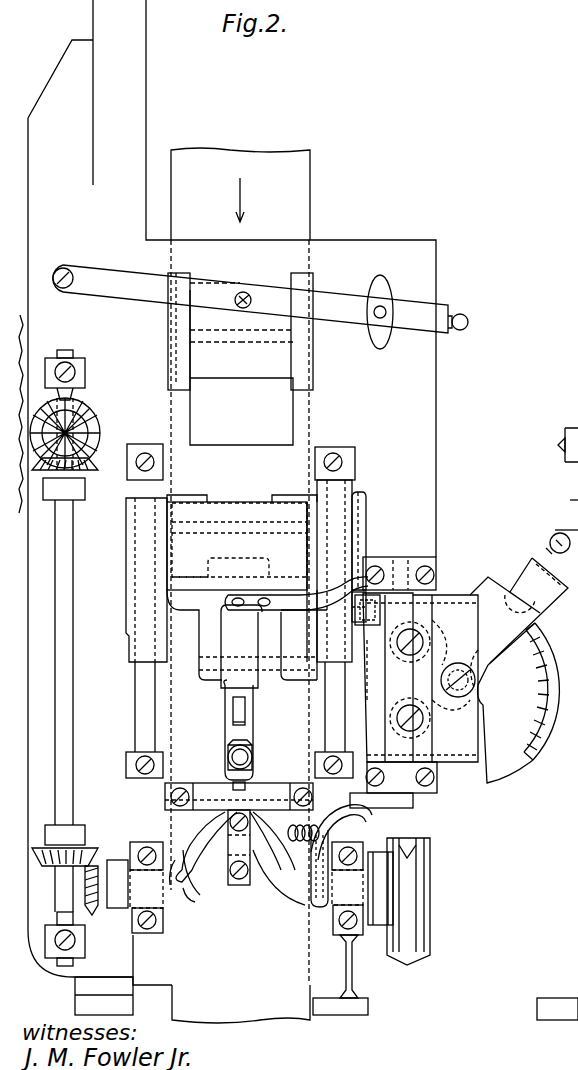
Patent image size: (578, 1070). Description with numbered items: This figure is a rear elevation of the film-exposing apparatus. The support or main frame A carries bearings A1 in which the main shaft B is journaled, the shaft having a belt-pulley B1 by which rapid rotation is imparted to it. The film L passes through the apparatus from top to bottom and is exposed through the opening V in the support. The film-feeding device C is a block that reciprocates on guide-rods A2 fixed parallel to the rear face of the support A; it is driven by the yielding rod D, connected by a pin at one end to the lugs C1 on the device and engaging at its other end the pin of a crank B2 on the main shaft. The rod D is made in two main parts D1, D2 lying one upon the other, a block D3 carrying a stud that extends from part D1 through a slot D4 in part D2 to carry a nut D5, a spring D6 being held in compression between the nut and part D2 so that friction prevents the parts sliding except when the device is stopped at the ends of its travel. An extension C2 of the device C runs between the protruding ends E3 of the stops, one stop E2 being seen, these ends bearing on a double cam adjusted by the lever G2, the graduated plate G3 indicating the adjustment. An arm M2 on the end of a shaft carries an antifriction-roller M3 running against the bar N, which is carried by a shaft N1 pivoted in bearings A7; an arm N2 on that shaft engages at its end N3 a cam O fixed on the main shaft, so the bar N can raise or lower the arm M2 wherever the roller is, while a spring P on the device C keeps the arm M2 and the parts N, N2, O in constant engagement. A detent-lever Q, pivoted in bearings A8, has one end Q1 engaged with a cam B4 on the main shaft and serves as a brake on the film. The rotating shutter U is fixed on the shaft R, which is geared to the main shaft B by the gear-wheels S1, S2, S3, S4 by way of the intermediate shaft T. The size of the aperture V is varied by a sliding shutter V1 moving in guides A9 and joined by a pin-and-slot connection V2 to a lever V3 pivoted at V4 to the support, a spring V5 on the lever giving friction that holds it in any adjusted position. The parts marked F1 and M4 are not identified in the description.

The support or main frame A is at (227, 507).
The film L is at (311, 198).
The opening in the support V is at (240, 359).
The shutter V1 is at (268, 378).
The pin-and-slot connection V2 is at (246, 292).
The lever V3 is at (250, 299).
The pivot V4 is at (70, 270).
The spring V5 is at (388, 290).
The guides A9 is at (168, 330).
The gear-wheel S1 is at (98, 420).
The gear-wheel S2 is at (95, 476).
The gear-wheel S3 is at (92, 845).
The gear-wheel S4 is at (100, 860).
The intermediate shaft T is at (70, 573).
The bearings A1 is at (235, 888).
The guide-rods A2 is at (136, 700).
The bearings A7 is at (410, 560).
The bearings A8 is at (318, 797).
The film-feeding device C is at (247, 587).
The lugs C1 is at (262, 637).
The extension C2 is at (372, 662).
The spring P is at (253, 592).
The yielding rod D is at (250, 752).
The first part of yielding rod D1 is at (226, 688).
The second part of yielding rod D2 is at (226, 714).
The block D3 is at (248, 722).
The slot D4 is at (246, 705).
The nut D5 is at (252, 762).
The spring D6 is at (228, 760).
The detent-lever Q is at (239, 796).
The end of detent-lever Q1 is at (195, 902).
The main shaft B is at (240, 858).
The belt-pulley B1 is at (430, 868).
The crank B2 is at (250, 847).
The cam B4 is at (198, 915).
The cam O is at (310, 908).
The bar N is at (375, 690).
The shaft N1 is at (400, 575).
The arm N2 is at (342, 826).
The end of arm N3 is at (318, 935).
The arm M2 is at (362, 548).
The antifriction-roller M3 is at (355, 612).
The guide arm M4 is at (565, 522).
The nut F1 is at (386, 611).
The stop E2 is at (385, 715).
The ends of stops E3 is at (420, 677).
The lever G2 is at (520, 570).
The graduated plate G3 is at (514, 680).
The shaft R is at (558, 445).
The shutter U is at (570, 492).